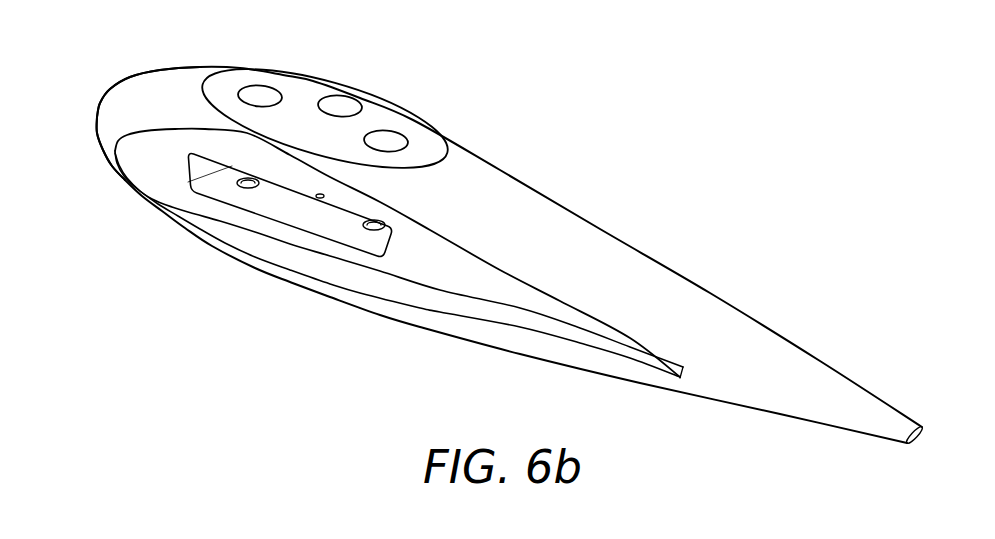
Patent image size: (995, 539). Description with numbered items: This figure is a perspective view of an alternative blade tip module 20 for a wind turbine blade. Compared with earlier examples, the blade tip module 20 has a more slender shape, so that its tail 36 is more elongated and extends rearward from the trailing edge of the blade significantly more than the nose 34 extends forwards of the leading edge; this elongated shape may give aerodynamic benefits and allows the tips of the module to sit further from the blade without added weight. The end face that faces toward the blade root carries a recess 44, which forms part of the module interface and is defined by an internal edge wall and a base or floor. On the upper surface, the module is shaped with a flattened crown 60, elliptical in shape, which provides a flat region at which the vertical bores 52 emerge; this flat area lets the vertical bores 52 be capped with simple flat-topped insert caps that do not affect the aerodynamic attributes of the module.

The blade tip module 20 is at (504, 257).
The nose 34 is at (107, 93).
The tail 36 is at (917, 443).
The recess 44 is at (438, 274).
The vertical bores 52 is at (386, 134).
The flattened crown 60 is at (340, 106).